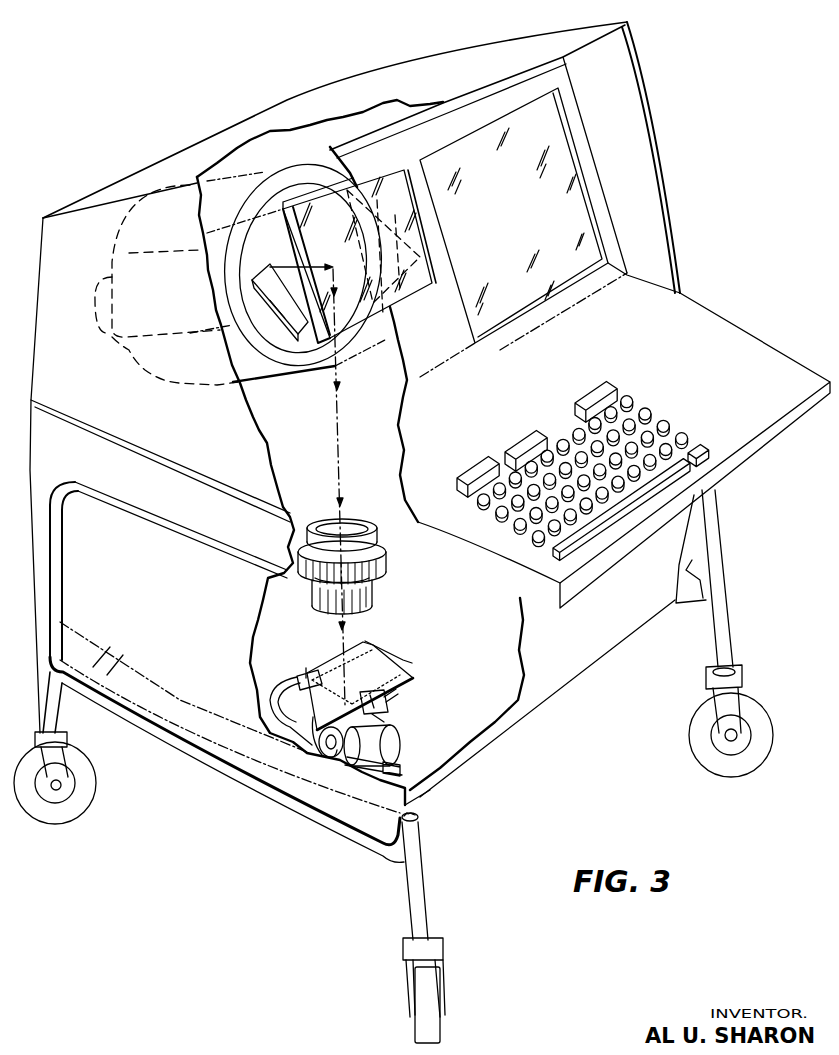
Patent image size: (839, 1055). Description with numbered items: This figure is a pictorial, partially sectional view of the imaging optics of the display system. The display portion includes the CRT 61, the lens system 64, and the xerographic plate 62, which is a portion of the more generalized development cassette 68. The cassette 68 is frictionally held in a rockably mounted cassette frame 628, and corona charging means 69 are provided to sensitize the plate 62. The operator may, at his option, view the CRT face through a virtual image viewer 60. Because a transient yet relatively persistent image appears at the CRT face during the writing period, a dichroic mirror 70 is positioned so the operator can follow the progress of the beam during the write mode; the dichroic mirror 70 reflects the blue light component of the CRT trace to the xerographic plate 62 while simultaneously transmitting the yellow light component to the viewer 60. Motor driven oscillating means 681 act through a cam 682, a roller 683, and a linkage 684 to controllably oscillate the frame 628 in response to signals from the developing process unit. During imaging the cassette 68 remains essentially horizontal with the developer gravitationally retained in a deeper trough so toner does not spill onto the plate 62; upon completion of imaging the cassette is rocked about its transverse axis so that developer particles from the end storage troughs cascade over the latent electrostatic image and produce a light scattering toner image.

The virtual image viewer 60 is at (380, 190).
The CRT 61 is at (100, 243).
The xerographic plate 62 is at (368, 672).
The lens system 64 is at (373, 604).
The development cassette 68 is at (410, 663).
The corona charging means 69 is at (303, 675).
The dichroic mirror 70 is at (274, 292).
The cassette frame 628 is at (389, 701).
The motor driven oscillating means 681 is at (398, 750).
The cam 682 is at (337, 750).
The roller 683 is at (308, 748).
The linkage 684 is at (382, 721).